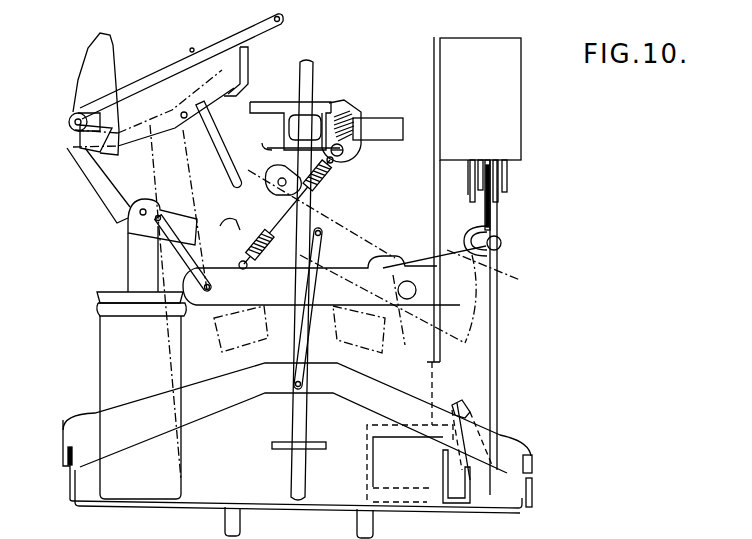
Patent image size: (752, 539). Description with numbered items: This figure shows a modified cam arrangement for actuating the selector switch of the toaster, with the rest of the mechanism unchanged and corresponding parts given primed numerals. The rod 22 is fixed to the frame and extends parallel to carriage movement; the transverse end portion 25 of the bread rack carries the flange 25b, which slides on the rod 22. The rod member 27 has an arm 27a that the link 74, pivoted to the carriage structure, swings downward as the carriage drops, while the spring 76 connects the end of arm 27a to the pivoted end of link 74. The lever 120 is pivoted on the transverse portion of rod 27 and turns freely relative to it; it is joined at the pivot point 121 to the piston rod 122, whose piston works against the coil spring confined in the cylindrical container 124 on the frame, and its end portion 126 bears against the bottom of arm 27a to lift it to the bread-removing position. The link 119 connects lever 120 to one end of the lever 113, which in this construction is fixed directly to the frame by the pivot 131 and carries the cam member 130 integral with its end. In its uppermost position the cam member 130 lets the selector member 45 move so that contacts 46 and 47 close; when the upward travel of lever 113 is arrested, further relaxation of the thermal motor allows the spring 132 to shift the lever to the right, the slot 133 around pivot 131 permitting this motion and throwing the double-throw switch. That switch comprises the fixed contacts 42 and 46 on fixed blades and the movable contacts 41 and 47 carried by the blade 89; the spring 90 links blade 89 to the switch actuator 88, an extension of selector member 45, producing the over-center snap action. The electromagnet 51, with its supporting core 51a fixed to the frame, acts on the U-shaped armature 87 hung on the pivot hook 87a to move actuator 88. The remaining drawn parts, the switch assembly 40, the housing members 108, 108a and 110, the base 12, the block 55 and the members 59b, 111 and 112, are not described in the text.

The rod member 27 is at (140, 78).
The arm of rod member 27a is at (192, 50).
The lever 120 is at (172, 100).
The pivot point 121 is at (183, 113).
The piston rod 122 is at (128, 257).
The end portion of lever 126 is at (248, 63).
The rod 22 is at (300, 84).
The T-shaped plate 59b is at (318, 115).
The spring 76 is at (347, 117).
The transverse end portion 25 is at (387, 124).
The flange 25b is at (283, 168).
The link 74 is at (355, 160).
The spring 132 is at (228, 200).
The link 119 is at (225, 148).
The lever 113 is at (350, 234).
The pivot 131 is at (403, 257).
The link 112 is at (322, 281).
The flap 111 is at (262, 341).
The slot 133 is at (389, 325).
The cam member 130 is at (485, 263).
The fixed contact 42 is at (462, 190).
The contact 41 is at (480, 188).
The contact 47 is at (492, 188).
The fixed contact 46 is at (506, 190).
The blade 89 is at (480, 216).
The spring 90 is at (472, 240).
The switch selector member 45 is at (503, 230).
The hook assembly 40 is at (510, 212).
The switch actuator 88 is at (497, 372).
The U-shaped armature 87 is at (475, 415).
The pivot hook 87a is at (462, 400).
The cover 108 is at (533, 488).
The tab 110 is at (535, 460).
The tab 108a is at (68, 488).
The base rail 12 is at (197, 507).
The cylindrical container 124 is at (100, 340).
The block 55 is at (100, 380).
The electromagnet 51 is at (430, 460).
The supporting core 51a is at (442, 503).